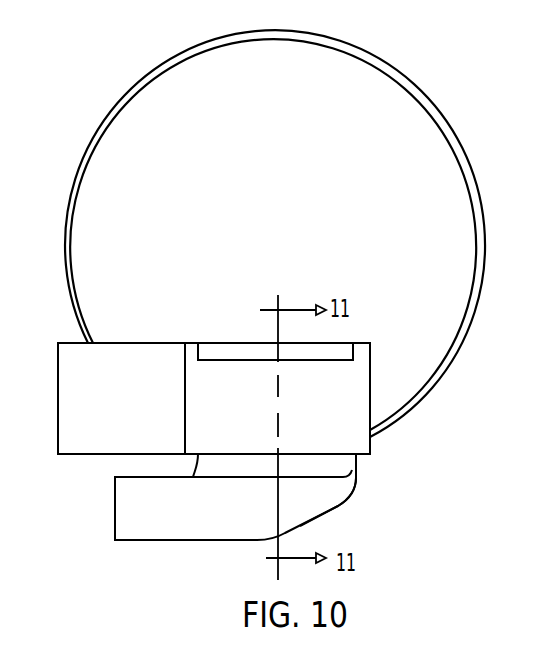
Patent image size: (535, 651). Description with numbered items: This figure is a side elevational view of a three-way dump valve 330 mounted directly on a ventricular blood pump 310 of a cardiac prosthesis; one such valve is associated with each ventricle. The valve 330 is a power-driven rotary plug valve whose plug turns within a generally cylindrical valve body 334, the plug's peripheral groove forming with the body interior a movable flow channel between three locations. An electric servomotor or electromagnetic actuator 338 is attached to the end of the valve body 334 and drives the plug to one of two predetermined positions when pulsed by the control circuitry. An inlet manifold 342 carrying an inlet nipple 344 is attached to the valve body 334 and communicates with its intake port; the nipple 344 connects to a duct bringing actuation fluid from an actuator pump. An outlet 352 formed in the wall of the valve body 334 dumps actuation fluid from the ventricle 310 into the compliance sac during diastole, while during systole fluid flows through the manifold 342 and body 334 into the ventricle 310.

The ventricular blood pump 310 is at (108, 155).
The three-way valve 330 is at (384, 455).
The valve body 334 is at (358, 375).
The electric servomotor or electromagnetic actuator 338 is at (108, 452).
The inlet manifold 342 is at (358, 481).
The inlet nipple 344 is at (122, 529).
The outlet 352 is at (246, 352).